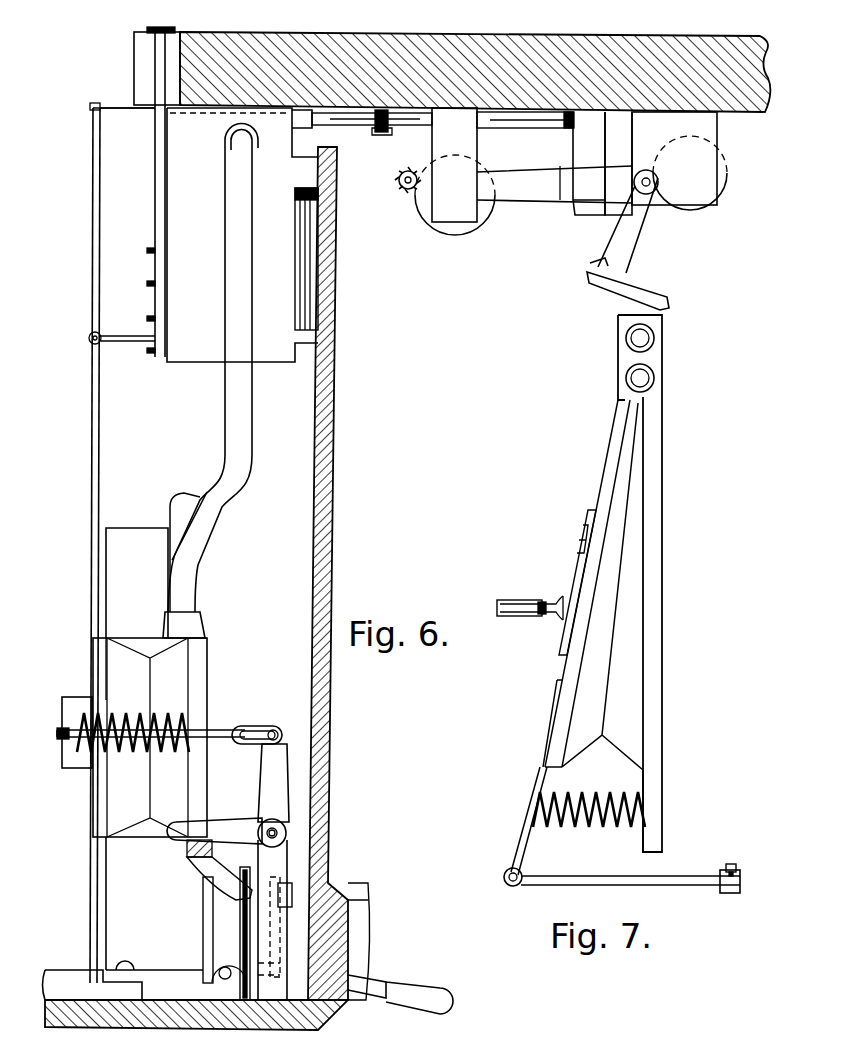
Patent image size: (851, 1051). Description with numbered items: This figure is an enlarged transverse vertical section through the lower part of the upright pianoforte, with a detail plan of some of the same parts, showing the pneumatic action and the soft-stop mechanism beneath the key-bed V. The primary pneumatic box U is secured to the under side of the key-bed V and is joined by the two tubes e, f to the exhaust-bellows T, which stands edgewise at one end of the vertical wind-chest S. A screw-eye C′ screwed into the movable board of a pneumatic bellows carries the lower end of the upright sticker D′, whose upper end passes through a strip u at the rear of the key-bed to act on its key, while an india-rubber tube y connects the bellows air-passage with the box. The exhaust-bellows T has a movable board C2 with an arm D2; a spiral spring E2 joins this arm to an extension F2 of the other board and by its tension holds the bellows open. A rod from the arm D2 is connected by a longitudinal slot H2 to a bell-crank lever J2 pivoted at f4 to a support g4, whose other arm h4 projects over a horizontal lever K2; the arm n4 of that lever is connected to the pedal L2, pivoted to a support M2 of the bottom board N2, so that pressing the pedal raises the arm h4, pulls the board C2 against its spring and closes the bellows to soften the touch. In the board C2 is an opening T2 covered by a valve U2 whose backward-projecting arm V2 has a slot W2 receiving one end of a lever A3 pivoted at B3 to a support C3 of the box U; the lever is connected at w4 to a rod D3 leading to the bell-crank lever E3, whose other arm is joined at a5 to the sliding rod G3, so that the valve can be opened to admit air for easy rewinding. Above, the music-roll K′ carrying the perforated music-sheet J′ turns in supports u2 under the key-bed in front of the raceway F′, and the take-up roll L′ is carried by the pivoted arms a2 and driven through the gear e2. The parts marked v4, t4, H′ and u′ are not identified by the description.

In FIG. 6, the key-bed V is at (358, 46).
In FIG. 6, the strip u is at (133, 43).
In FIG. 6, the sticker D′ is at (155, 186).
In FIG. 6, the connection of lever to rod w4 is at (99, 106).
In FIG. 6, the rod D3 is at (132, 112).
In FIG. 6, the lever A3 is at (93, 438).
In FIG. 6, the pivot B3 is at (90, 342).
In FIG. 6, the support C3 is at (120, 345).
In FIG. 6, the screw-eye C′ is at (147, 251).
In FIG. 6, the primary pneumatic box U is at (242, 235).
In FIG. 6, the tube e is at (252, 465).
In FIG. 7, the tube e is at (626, 378).
In FIG. 6, the tube f is at (190, 504).
In FIG. 7, the tube f is at (626, 338).
In FIG. 6, the wind-chest S is at (138, 540).
In FIG. 6, the rod v4 is at (92, 616).
In FIG. 7, the rod v4 is at (562, 603).
In FIG. 6, the exhaust-bellows T is at (180, 686).
In FIG. 7, the exhaust-bellows T is at (633, 587).
In FIG. 6, the arm D2 is at (62, 724).
In FIG. 7, the arm D2 is at (538, 786).
In FIG. 6, the movable board C2 is at (218, 729).
In FIG. 7, the movable board C2 is at (552, 750).
In FIG. 6, the longitudinal slot H2 is at (256, 728).
In FIG. 6, the bell-crank lever J2 is at (262, 808).
In FIG. 7, the bell-crank lever J2 is at (744, 880).
In FIG. 6, the support g4 is at (290, 857).
In FIG. 6, the pivot f4 is at (280, 833).
In FIG. 7, the pivot f4 is at (732, 864).
In FIG. 6, the arm h4 is at (180, 846).
In FIG. 6, the horizontal lever K2 is at (200, 874).
In FIG. 6, the support M2 is at (203, 934).
In FIG. 6, the roller t4 is at (233, 968).
In FIG. 6, the arm n4 is at (290, 912).
In FIG. 6, the india-rubber tube y is at (318, 252).
In FIG. 6, the bottom board N2 is at (264, 1030).
In FIG. 6, the pedal L2 is at (370, 982).
In FIG. 6, the take-up roll L′ is at (459, 224).
In FIG. 6, the gear e2 is at (398, 183).
In FIG. 6, the bell-crank lever E3 is at (353, 126).
In FIG. 6, the connection a5 is at (381, 133).
In FIG. 6, the rod G3 is at (392, 131).
In FIG. 6, the bar H′ is at (519, 126).
In FIG. 6, the raceway F′ is at (580, 217).
In FIG. 6, the perforated music-sheet J′ is at (614, 217).
In FIG. 6, the arms a2 is at (526, 203).
In FIG. 6, the pin u′ is at (562, 204).
In FIG. 6, the music-roll K′ is at (680, 210).
In FIG. 6, the supports u2 is at (700, 208).
In FIG. 7, the opening T2 is at (590, 584).
In FIG. 7, the arm V2 is at (512, 606).
In FIG. 7, the slot W2 is at (515, 614).
In FIG. 7, the valve U2 is at (562, 636).
In FIG. 7, the spiral spring E2 is at (586, 826).
In FIG. 7, the extension F2 is at (663, 828).